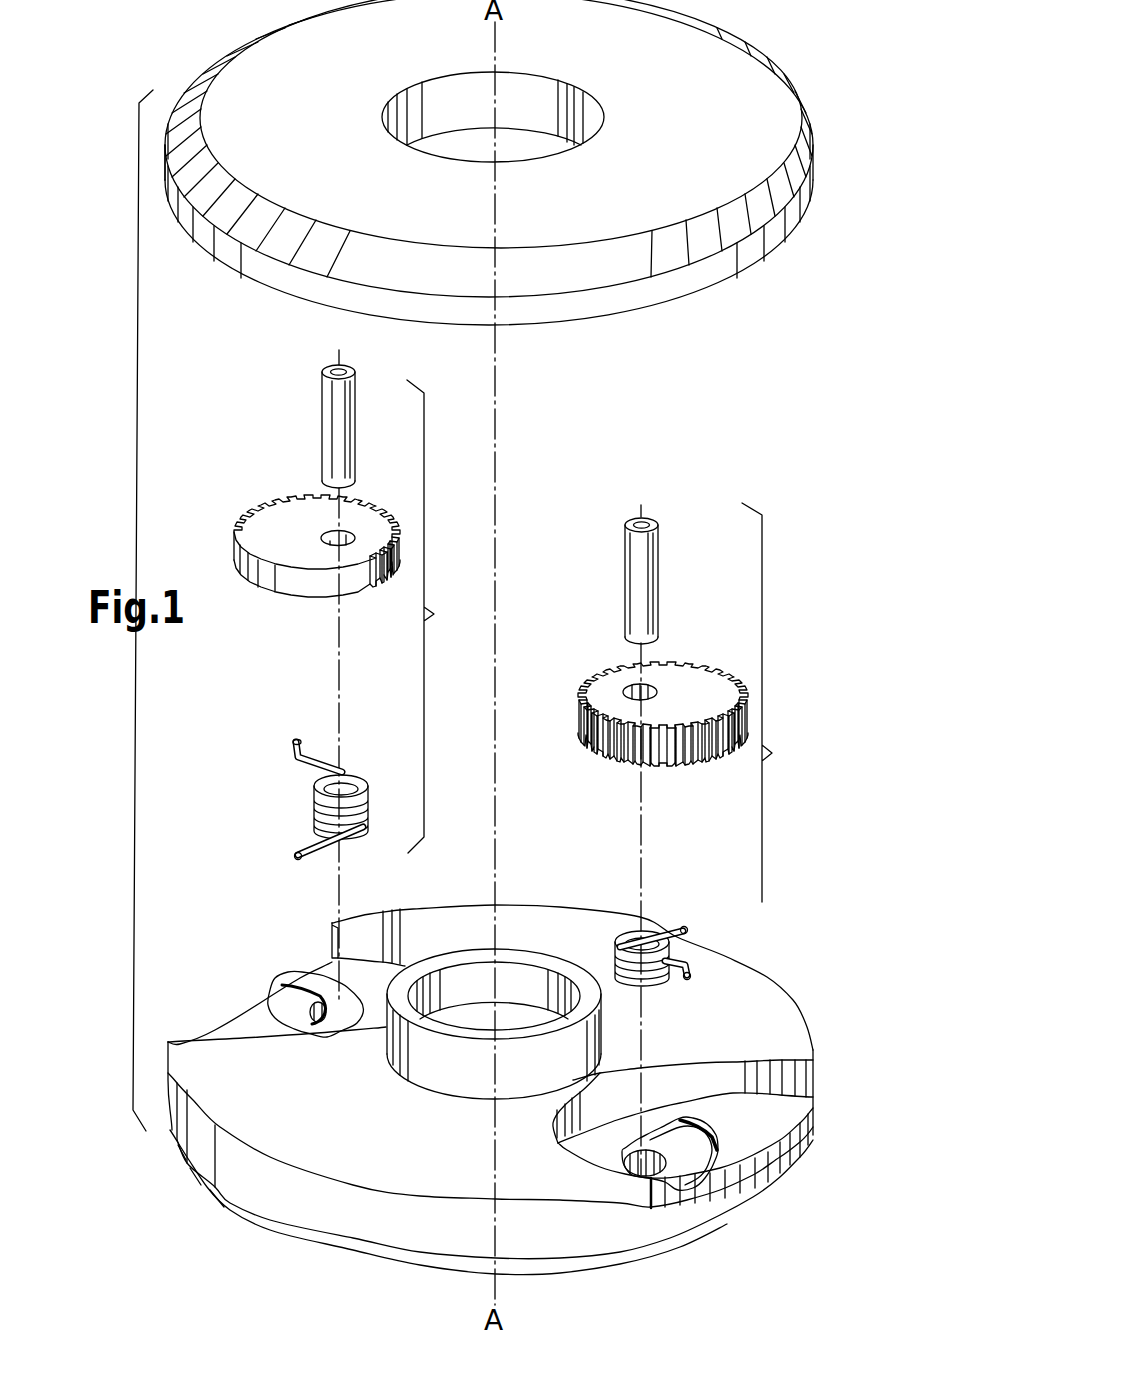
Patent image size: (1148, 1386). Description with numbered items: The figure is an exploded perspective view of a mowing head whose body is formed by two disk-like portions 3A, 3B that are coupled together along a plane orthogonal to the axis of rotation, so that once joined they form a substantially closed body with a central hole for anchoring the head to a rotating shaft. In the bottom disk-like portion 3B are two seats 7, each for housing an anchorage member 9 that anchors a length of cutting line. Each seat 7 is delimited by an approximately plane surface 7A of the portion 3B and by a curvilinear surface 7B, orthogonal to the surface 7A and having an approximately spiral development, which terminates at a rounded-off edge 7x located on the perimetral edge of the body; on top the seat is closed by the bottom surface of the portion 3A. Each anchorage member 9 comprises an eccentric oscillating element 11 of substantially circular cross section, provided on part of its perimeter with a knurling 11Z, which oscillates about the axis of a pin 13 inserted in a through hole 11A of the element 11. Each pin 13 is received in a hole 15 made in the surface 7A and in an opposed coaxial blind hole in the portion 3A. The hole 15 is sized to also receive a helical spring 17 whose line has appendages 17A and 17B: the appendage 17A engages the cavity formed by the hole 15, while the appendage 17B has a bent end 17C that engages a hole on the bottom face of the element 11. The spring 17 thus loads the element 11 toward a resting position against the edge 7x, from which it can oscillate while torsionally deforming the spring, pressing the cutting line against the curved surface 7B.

The disk-like portion 3A is at (680, 304).
The disk-like portion 3B is at (523, 1076).
The seat 7 is at (523, 1076).
The plane surface 7A is at (258, 1002).
The curvilinear surface 7B is at (362, 942).
The rounded-off edge 7x is at (330, 948).
The anchorage member 9 is at (434, 614).
The eccentric oscillating element 11 is at (471, 602).
The through hole 11A is at (350, 547).
The knurling 11Z is at (367, 500).
The pin 13 is at (335, 412).
The hole 15 is at (338, 1013).
The helical spring 17 is at (509, 867).
The appendage 17A is at (314, 858).
The appendage 17B is at (313, 775).
The bent end 17C is at (290, 753).